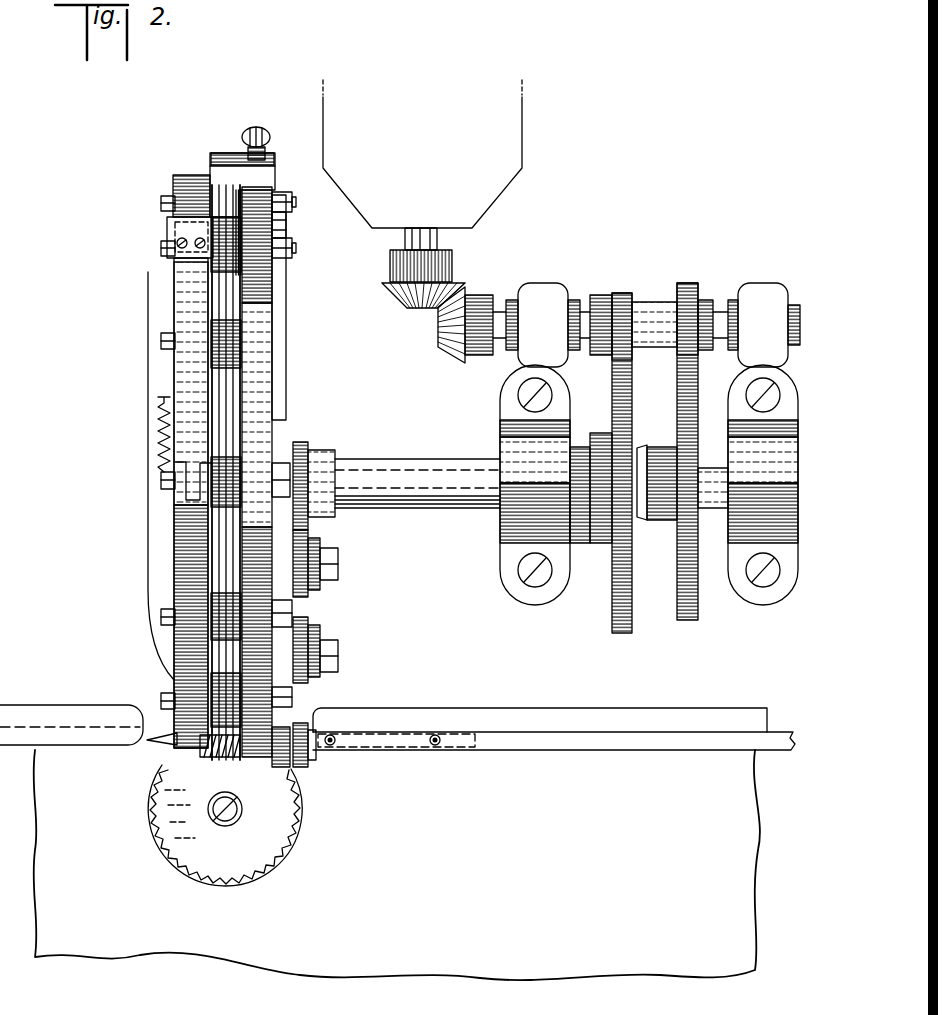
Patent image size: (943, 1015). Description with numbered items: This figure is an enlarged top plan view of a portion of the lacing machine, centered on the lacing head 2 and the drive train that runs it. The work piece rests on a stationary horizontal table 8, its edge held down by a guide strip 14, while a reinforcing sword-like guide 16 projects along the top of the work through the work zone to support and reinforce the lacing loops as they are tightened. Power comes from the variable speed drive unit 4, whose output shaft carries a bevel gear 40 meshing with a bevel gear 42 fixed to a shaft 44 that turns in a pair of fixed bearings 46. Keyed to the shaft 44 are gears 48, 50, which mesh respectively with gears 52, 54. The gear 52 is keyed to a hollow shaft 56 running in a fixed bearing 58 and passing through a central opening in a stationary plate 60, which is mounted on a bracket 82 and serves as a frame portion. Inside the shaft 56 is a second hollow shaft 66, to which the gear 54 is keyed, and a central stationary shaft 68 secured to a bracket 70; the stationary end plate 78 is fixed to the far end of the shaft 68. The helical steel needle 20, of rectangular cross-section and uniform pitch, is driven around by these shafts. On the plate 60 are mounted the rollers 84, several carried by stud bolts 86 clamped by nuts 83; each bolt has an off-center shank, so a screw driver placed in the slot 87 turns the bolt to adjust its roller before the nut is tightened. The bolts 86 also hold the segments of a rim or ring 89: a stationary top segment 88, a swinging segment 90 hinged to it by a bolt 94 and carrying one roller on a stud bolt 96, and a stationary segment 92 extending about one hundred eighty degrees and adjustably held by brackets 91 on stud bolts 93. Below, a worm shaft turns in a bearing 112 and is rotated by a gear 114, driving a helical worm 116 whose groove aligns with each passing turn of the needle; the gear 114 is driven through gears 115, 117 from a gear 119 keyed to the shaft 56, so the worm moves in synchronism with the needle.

The lacing head 2 is at (131, 229).
The variable speed drive unit 4 is at (515, 118).
The stationary horizontal table 8 is at (400, 957).
The guide strip 14 is at (540, 750).
The reinforcing sword-like guide 16 is at (163, 733).
The helical steel needle 20 is at (228, 418).
The bevel gear 40 is at (398, 292).
The bevel gear 42 is at (448, 343).
The shaft 44 is at (499, 317).
The fixed bearings 46 is at (538, 290).
The gear 48 is at (623, 295).
The gear 50 is at (692, 287).
The gear 52 is at (625, 625).
The gear 54 is at (690, 612).
The hollow shaft 56 is at (405, 463).
The fixed bearing 58 is at (515, 442).
The stationary plate 60 is at (263, 436).
The hollow shaft 66 is at (637, 480).
The central stationary shaft 68 is at (718, 488).
The bracket 70 is at (747, 438).
The stationary end plate 78 is at (151, 520).
The bracket 82 is at (280, 341).
The nuts 83 is at (278, 189).
The rollers 84 is at (222, 250).
The stud bolts 86 is at (292, 222).
The slot 87 is at (292, 203).
The stationary top segment 88 is at (187, 567).
The rim or ring 89 is at (173, 676).
The swinging segment 90 is at (185, 388).
The brackets 91 is at (223, 157).
The stationary segment 92 is at (190, 183).
The stud bolts 93 is at (267, 137).
The bolt 94 is at (165, 483).
The stud bolt 96 is at (162, 340).
The bearing 112 is at (260, 752).
The gear 114 is at (294, 767).
The gear 115 is at (306, 575).
The helical worm 116 is at (220, 753).
The gear 117 is at (284, 653).
The gear 119 is at (300, 442).